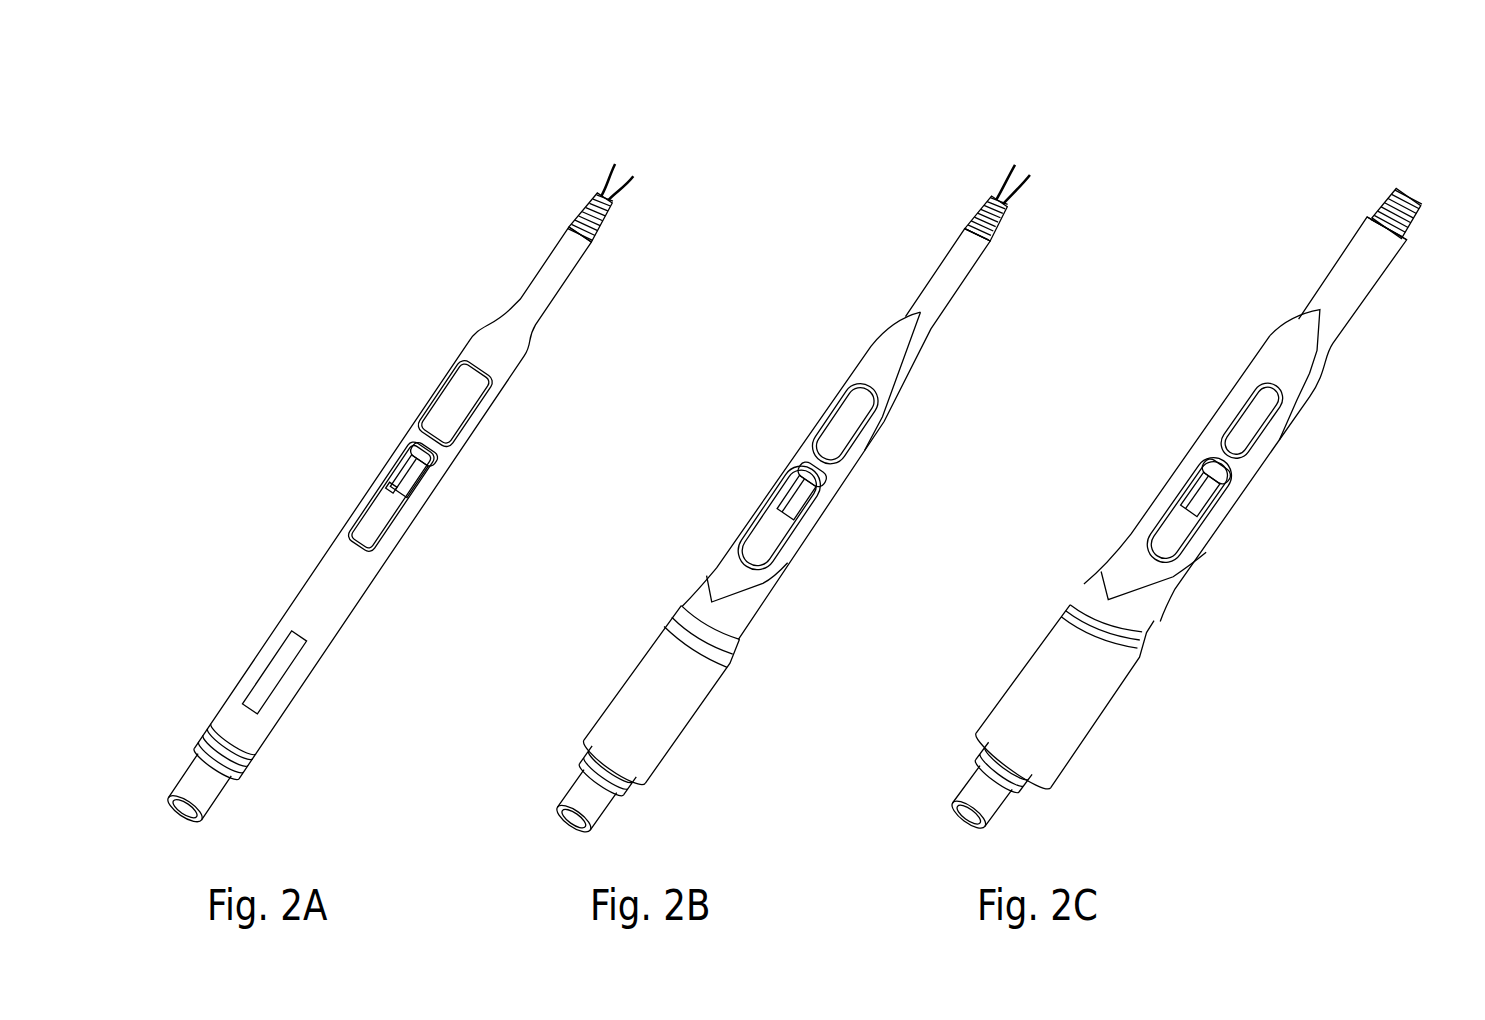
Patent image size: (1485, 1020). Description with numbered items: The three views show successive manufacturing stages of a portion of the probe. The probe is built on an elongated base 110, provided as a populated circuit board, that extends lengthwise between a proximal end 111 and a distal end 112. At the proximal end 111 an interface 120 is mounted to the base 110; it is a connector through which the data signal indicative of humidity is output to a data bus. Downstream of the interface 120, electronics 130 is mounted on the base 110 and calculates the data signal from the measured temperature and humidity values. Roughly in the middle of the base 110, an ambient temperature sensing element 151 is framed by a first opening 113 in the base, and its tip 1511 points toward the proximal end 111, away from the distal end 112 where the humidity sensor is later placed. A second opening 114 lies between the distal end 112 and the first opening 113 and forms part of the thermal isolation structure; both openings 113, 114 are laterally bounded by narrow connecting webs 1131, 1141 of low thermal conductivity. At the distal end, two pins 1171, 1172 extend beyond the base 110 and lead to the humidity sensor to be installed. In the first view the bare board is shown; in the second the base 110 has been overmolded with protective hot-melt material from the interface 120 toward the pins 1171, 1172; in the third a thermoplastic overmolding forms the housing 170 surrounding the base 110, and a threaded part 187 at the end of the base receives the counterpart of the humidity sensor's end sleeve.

In FIG. 2A, the base 110 is at (320, 583).
In FIG. 2A, the proximal end 111 is at (162, 823).
In FIG. 2B, the proximal end 111 is at (550, 838).
In FIG. 2C, the proximal end 111 is at (932, 838).
In FIG. 2A, the distal end 112 is at (599, 136).
In FIG. 2B, the distal end 112 is at (999, 136).
In FIG. 2C, the distal end 112 is at (1429, 148).
In FIG. 2A, the first opening 113 is at (372, 520).
In FIG. 2B, the first opening 113 is at (768, 550).
In FIG. 2C, the first opening 113 is at (1165, 552).
In FIG. 2A, the connecting webs 1131 is at (387, 460).
In FIG. 2A, the second opening 114 is at (463, 382).
In FIG. 2B, the second opening 114 is at (853, 430).
In FIG. 2C, the second opening 114 is at (1250, 430).
In FIG. 2A, the connecting webs 1141 is at (438, 400).
In FIG. 2A, the interface 120 is at (178, 772).
In FIG. 2B, the interface 120 is at (605, 815).
In FIG. 2C, the interface 120 is at (1003, 815).
In FIG. 2A, the electronics 130 is at (273, 672).
In FIG. 2A, the ambient temperature sensing element 151 is at (432, 478).
In FIG. 2B, the ambient temperature sensing element 151 is at (818, 505).
In FIG. 2C, the ambient temperature sensing element 151 is at (1215, 510).
In FIG. 2A, the tip 1511 is at (395, 500).
In FIG. 2C, the housing 170 is at (1350, 290).
In FIG. 2C, the threaded part 187 is at (1385, 232).
In FIG. 2A, the pin 1171 is at (607, 190).
In FIG. 2B, the pin 1171 is at (1005, 187).
In FIG. 2C, the pin 1171 is at (1390, 197).
In FIG. 2A, the pin 1172 is at (625, 180).
In FIG. 2B, the pin 1172 is at (1026, 180).
In FIG. 2C, the pin 1172 is at (1413, 215).